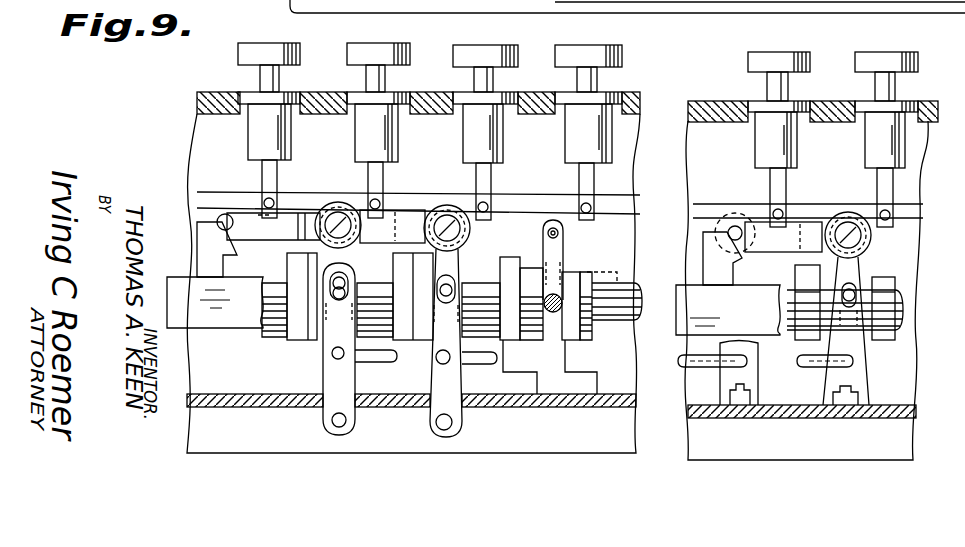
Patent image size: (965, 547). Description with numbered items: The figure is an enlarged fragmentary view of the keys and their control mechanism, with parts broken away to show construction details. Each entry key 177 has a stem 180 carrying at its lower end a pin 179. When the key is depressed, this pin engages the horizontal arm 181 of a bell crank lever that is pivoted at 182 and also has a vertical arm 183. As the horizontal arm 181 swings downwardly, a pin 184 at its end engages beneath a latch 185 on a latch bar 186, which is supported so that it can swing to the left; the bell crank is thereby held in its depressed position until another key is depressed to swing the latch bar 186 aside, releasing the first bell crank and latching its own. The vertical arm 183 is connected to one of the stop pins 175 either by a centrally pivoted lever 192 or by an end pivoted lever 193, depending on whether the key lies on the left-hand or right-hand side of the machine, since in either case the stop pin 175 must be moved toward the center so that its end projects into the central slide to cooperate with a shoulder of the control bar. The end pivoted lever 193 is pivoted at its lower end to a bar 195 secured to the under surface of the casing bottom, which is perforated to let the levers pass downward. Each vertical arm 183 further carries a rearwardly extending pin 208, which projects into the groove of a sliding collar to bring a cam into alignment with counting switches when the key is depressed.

The stop pin 175 is at (378, 360).
The entry key 177 is at (356, 44).
The pin 179 is at (270, 198).
The stem 180 is at (279, 170).
The horizontal arm 181 is at (255, 228).
The pivot 182 is at (344, 220).
The vertical arm 183 is at (347, 258).
The pin 184 is at (226, 215).
The latch 185 is at (197, 232).
The latch bar 186 is at (252, 299).
The centrally pivoted lever 192 is at (860, 352).
The end pivoted lever 193 is at (322, 371).
The bar 195 is at (509, 6).
The pin 208 is at (554, 292).